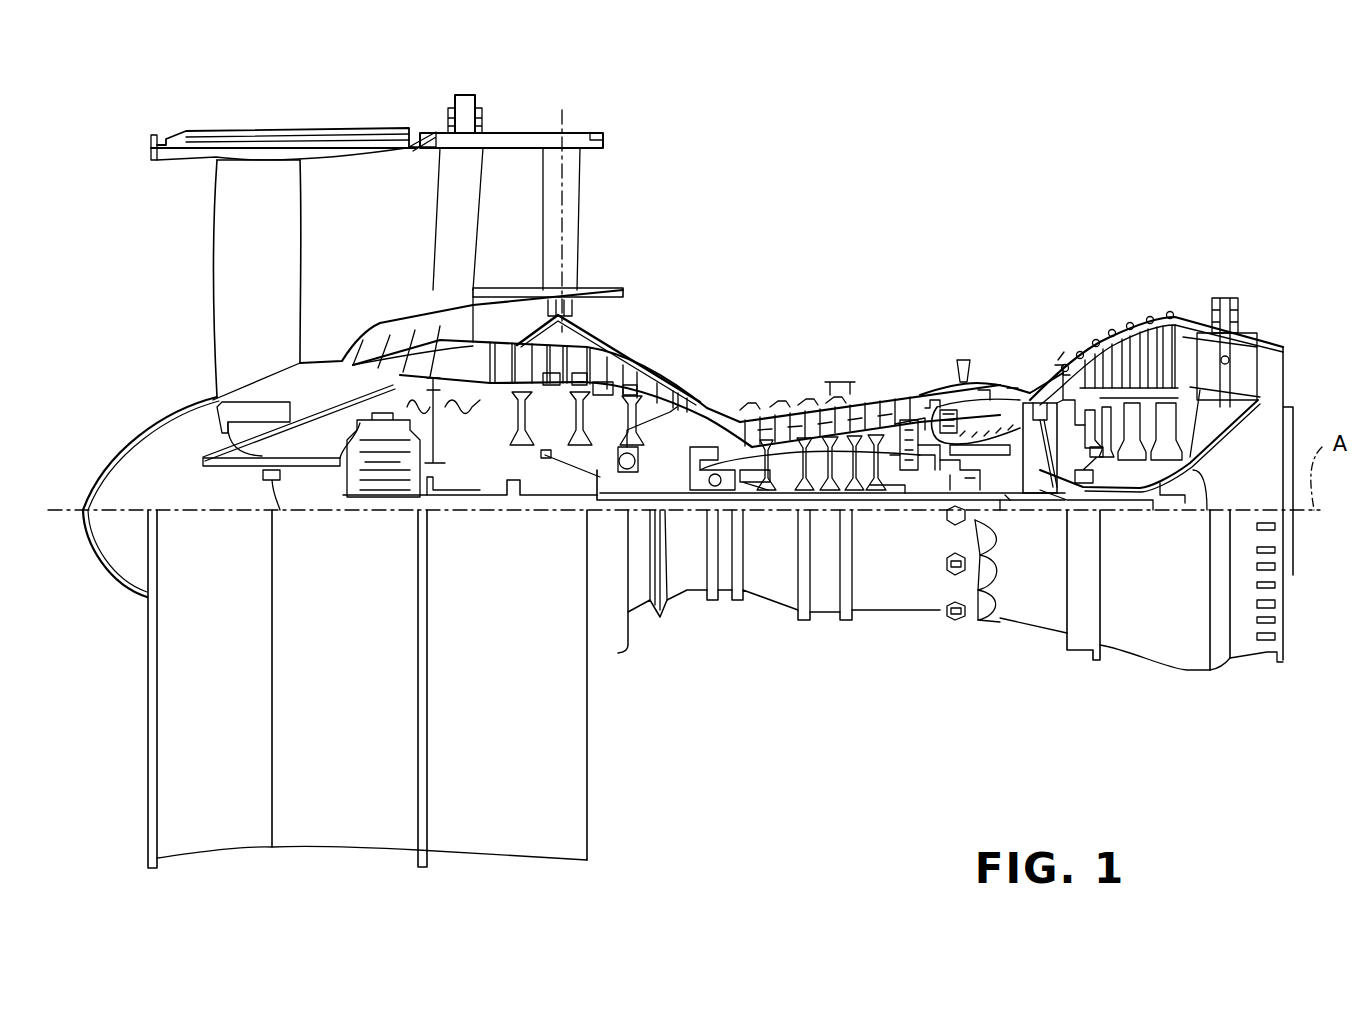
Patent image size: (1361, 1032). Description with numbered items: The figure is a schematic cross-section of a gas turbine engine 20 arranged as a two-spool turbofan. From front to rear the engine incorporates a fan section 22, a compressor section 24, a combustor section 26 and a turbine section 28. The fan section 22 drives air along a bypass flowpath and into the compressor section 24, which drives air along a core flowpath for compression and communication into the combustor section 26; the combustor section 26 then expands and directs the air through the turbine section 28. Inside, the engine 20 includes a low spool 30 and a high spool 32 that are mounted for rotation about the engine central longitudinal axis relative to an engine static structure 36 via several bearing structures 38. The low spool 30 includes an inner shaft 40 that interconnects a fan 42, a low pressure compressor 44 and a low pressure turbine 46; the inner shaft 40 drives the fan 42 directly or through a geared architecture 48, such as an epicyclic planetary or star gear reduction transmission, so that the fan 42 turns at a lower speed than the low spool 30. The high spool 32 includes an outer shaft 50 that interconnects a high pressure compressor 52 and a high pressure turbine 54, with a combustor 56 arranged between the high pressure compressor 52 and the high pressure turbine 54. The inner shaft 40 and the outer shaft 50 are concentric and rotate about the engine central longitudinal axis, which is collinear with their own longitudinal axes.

The gas turbine engine 20 is at (1046, 207).
The fan section 22 is at (147, 109).
The compressor section 24 is at (862, 259).
The combustor section 26 is at (980, 259).
The turbine section 28 is at (980, 259).
The low spool 30 is at (674, 465).
The high spool 32 is at (873, 462).
The engine static structure 36 is at (826, 614).
The bearing structures 38 is at (187, 581).
The inner shaft 40 is at (1007, 500).
The fan 42 is at (272, 300).
The low pressure compressor 44 is at (605, 360).
The low pressure turbine 46 is at (1142, 352).
The geared architecture 48 is at (384, 463).
The outer shaft 50 is at (993, 477).
The high pressure compressor 52 is at (752, 416).
The high pressure turbine 54 is at (1042, 400).
The combustor 56 is at (975, 422).